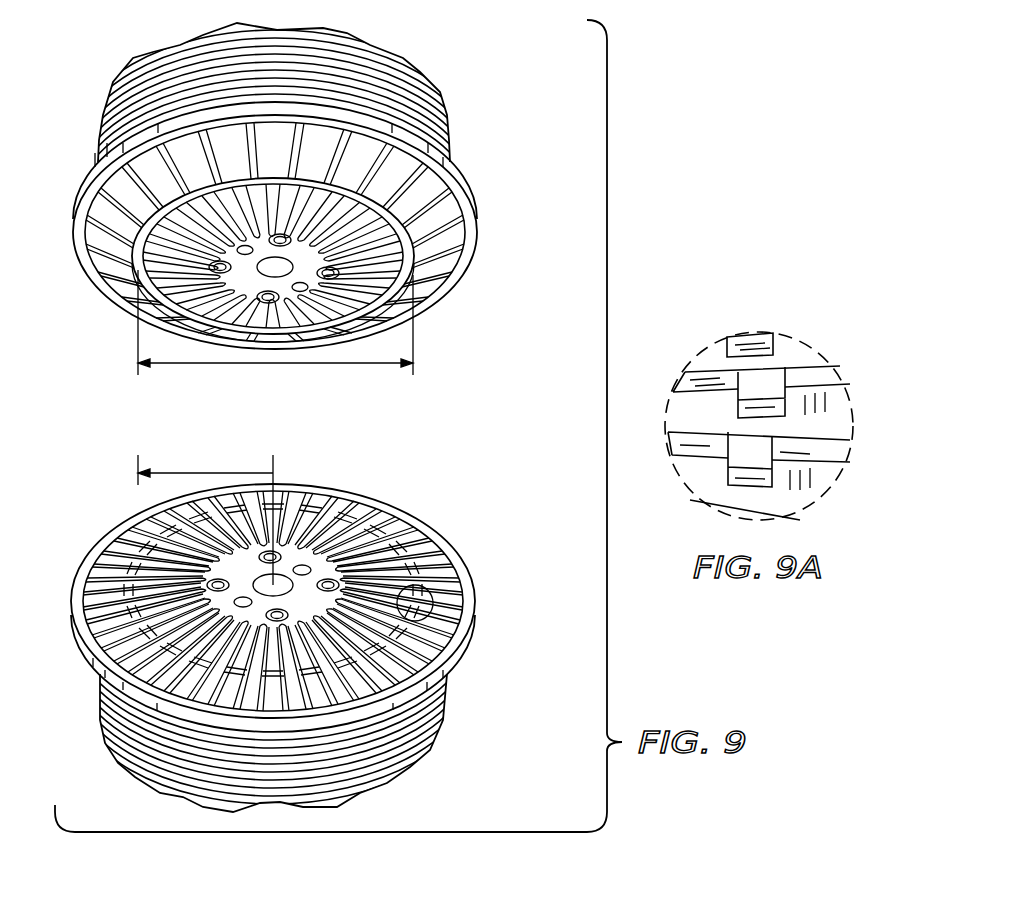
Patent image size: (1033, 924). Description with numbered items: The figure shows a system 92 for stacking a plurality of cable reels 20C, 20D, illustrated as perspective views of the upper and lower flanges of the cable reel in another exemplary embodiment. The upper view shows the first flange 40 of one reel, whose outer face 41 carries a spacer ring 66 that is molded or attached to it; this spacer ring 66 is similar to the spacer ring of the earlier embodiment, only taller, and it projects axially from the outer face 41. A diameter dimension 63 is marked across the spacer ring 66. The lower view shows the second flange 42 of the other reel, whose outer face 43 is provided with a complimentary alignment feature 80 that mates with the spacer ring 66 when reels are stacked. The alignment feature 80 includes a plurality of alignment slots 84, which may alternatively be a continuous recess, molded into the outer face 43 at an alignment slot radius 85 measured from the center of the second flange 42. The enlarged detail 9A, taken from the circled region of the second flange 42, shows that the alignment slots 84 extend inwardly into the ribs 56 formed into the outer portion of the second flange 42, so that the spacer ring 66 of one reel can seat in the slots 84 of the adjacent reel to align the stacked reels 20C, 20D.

In FIG. 9, the system for stacking cable reels 92 is at (304, 417).
In FIG. 9, the cable reel 20C is at (304, 217).
In FIG. 9, the cable reel 20D is at (299, 620).
In FIG. 9, the first flange 40 is at (477, 248).
In FIG. 9, the outer face of the first flange 41 is at (113, 202).
In FIG. 9, the spacer ring 66 is at (450, 196).
In FIG. 9, the ring diameter 63 is at (273, 364).
In FIG. 9, the second flange 42 is at (470, 636).
In FIG. 9, the outer face of the second flange 43 is at (247, 602).
In FIG. 9, the complimentary alignment feature 80 is at (347, 535).
In FIG. 9, the ribs 56 is at (200, 683).
In FIG. 9A, the ribs 56 is at (820, 385).
In FIG. 9, the alignment slots 84 is at (391, 555).
In FIG. 9A, the alignment slots 84 is at (770, 405).
In FIG. 9, the alignment slot radius 85 is at (205, 473).
In FIG. 9, the detail view callout 9A is at (433, 598).